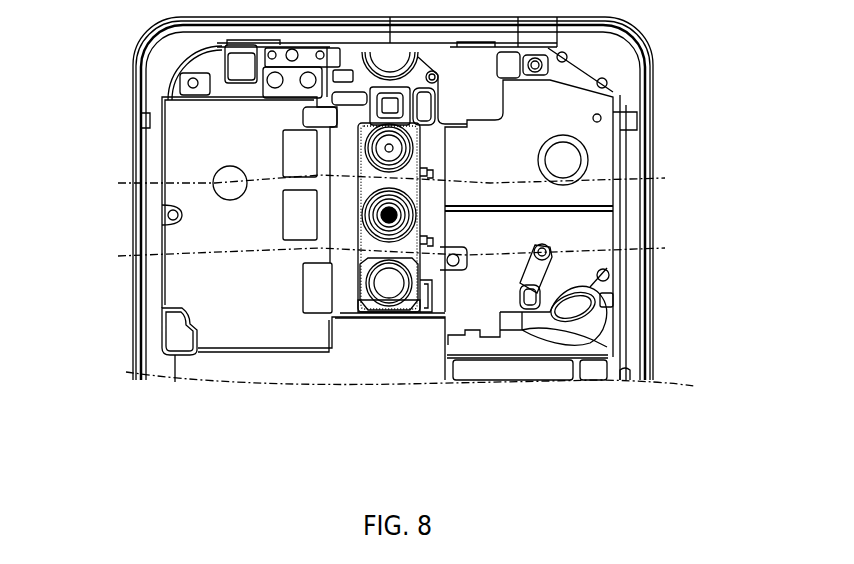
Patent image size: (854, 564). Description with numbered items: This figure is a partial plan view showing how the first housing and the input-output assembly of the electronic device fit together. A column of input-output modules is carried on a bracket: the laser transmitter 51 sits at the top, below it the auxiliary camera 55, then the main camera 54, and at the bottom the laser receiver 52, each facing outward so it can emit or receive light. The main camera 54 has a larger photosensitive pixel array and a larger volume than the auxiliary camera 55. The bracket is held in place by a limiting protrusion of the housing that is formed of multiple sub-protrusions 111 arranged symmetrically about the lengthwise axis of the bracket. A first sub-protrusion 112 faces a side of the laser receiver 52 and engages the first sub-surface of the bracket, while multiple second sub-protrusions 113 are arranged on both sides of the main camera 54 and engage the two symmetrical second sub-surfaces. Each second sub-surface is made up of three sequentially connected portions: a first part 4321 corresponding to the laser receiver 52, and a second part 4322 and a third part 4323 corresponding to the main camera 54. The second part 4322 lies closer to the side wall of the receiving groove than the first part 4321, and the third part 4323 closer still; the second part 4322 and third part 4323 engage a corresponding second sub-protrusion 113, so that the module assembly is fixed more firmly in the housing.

The laser transmitter 51 is at (375, 105).
The auxiliary camera 55 is at (385, 148).
The main camera 54 is at (385, 215).
The laser receiver 52 is at (385, 284).
The third part 4323 is at (436, 172).
The second part 4322 is at (437, 238).
The first part 4321 is at (425, 291).
The second sub-protrusion 113 is at (389, 217).
The first sub-protrusion 112 is at (363, 318).
The sub-protrusion 111 is at (425, 411).